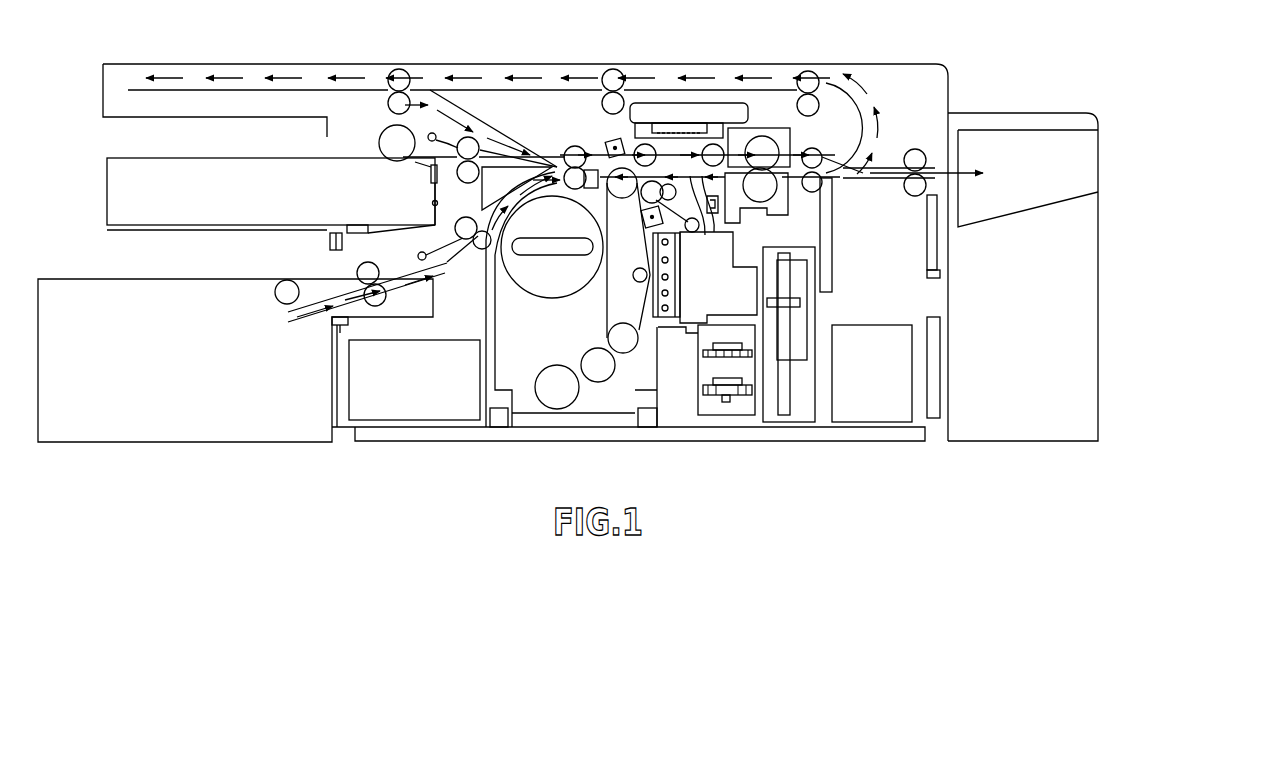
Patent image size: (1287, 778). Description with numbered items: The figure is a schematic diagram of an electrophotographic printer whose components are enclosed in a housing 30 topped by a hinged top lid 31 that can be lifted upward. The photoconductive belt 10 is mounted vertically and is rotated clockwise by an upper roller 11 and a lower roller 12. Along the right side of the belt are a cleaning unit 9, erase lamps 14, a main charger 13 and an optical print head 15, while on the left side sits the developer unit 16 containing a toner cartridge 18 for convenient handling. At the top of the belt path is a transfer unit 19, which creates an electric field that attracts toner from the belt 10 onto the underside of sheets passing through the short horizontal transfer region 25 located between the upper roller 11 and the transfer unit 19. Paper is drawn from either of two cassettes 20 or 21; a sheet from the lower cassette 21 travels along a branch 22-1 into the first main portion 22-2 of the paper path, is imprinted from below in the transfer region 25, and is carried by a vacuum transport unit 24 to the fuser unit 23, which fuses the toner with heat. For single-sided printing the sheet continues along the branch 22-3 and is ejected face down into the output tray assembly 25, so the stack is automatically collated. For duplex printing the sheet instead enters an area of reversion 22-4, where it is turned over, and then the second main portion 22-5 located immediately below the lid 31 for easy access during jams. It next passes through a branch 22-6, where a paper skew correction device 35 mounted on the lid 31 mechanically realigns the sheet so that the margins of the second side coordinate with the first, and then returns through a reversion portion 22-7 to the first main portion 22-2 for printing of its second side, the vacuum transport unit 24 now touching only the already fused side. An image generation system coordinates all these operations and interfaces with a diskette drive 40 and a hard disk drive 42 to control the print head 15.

The cleaning unit 9 is at (657, 196).
The photoconductive belt 10 is at (607, 324).
The upper roller 11 is at (622, 190).
The roller 12 is at (627, 325).
The main charger 13 is at (644, 236).
The erase lamps 14 is at (643, 222).
The optical print head 15 is at (720, 293).
The developer unit 16 is at (541, 344).
The toner cartridge 18 is at (565, 287).
The transfer unit 19 is at (612, 148).
The paper handling cassette 20 is at (256, 193).
The paper handling cassette 21 is at (197, 391).
The branch of the paper path 22-1 is at (468, 262).
The first main portion of the paper path 22-2 is at (702, 217).
The branch of the paper path 22-3 is at (885, 178).
The area of reversion 22-4 is at (882, 121).
The second main portion of the paper path 22-5 is at (631, 73).
The branch of the paper path 22-6 is at (306, 77).
The reversion portion 22-7 is at (453, 123).
The fuser unit 23 is at (782, 148).
The vacuum transport unit 24 is at (742, 109).
The transfer zone / output tray assembly 25 is at (604, 168).
The housing 30 is at (650, 432).
The top lid 31 is at (722, 63).
The paper skew correction device 35 is at (159, 62).
The diskette drive 40 is at (742, 408).
The hard disk drive 42 is at (803, 412).